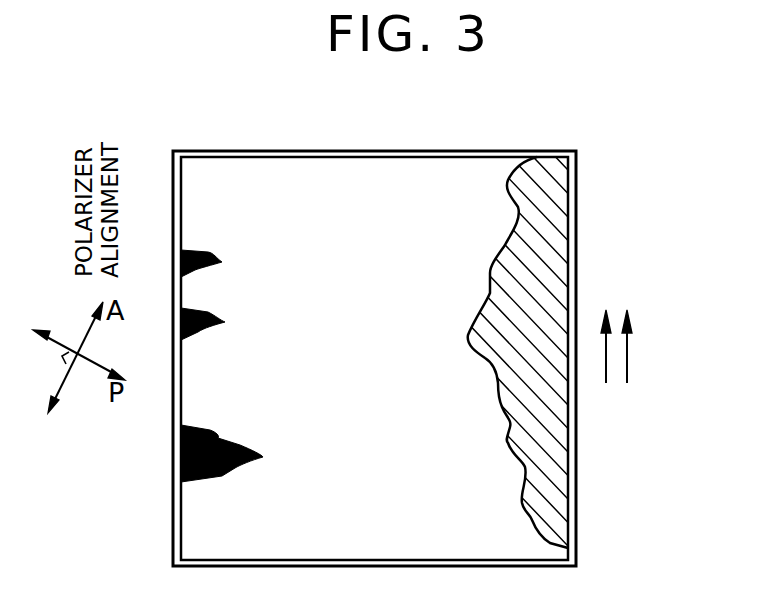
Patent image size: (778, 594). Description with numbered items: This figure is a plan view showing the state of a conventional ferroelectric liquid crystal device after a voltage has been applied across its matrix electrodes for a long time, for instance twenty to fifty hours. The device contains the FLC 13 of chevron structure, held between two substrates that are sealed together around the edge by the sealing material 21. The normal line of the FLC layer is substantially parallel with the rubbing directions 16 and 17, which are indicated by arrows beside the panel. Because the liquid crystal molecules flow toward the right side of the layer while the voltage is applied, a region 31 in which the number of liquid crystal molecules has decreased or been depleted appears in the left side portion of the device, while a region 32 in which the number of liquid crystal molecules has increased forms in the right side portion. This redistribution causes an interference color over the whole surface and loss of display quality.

The FLC 13 is at (317, 190).
The sealing material 21 is at (472, 156).
The region in which liquid crystal molecules have decreased or been depleted 31 is at (215, 268).
The region in which liquid crystal molecules have increased 32 is at (547, 495).
The rubbing direction 16 is at (606, 357).
The rubbing direction 17 is at (627, 343).